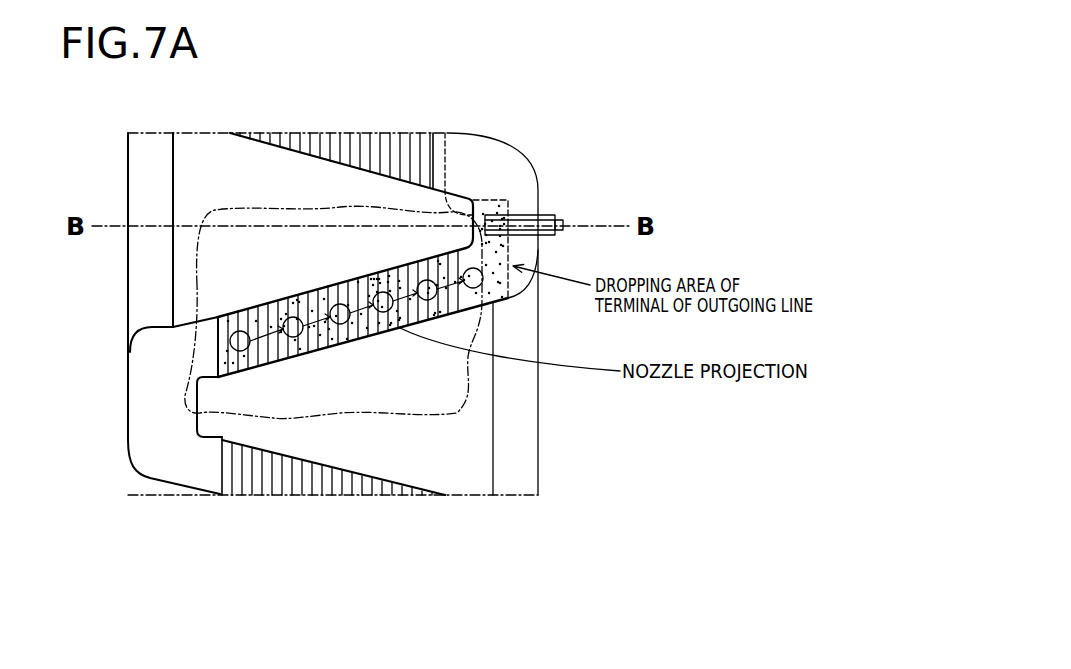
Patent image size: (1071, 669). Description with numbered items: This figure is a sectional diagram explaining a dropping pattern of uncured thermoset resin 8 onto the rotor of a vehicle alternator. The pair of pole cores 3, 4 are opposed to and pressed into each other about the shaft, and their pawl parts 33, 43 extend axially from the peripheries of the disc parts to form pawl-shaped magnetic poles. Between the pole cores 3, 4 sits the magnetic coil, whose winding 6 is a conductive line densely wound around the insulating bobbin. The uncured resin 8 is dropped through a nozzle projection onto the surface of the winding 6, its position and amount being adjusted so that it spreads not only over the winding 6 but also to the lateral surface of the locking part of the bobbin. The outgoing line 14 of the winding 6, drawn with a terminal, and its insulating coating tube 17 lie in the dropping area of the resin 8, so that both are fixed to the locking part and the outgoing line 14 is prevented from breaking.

The pole core 3 is at (125, 488).
The pole core 4 is at (543, 126).
The winding 6 is at (443, 170).
The thermoset resin 8 is at (512, 300).
The outgoing line 14 is at (563, 222).
The insulating coating tube 17 is at (560, 238).
The pawl part 33 is at (297, 180).
The pawl part 43 is at (337, 440).